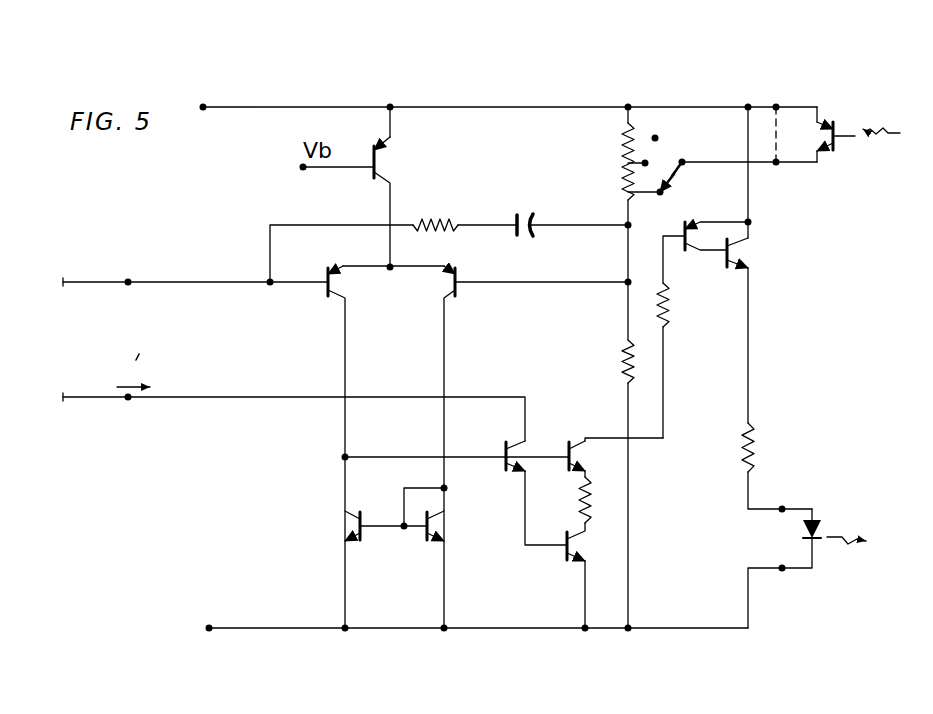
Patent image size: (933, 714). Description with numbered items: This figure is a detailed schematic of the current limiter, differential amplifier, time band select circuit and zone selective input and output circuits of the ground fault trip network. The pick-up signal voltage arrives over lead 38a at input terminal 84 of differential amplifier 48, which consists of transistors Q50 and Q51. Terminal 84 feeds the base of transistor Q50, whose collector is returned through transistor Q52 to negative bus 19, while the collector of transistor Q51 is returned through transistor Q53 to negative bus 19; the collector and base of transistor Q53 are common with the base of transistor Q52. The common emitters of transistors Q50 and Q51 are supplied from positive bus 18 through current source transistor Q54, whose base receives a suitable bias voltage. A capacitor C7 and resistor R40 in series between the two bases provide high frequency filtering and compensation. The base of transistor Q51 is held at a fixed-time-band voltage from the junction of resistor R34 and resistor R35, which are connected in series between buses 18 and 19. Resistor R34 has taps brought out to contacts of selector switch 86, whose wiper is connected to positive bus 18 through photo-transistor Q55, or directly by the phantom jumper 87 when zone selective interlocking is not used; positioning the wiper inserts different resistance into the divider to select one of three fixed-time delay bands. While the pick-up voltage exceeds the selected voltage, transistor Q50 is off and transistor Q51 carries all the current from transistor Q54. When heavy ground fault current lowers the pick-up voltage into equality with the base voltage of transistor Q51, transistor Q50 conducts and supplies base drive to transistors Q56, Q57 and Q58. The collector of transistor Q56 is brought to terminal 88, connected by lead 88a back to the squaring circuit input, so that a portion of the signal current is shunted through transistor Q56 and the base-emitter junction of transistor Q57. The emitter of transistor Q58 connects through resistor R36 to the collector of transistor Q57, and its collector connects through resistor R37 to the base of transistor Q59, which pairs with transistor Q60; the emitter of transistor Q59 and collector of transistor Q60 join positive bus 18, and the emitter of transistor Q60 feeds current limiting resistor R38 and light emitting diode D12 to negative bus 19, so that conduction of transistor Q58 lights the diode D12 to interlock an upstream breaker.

The positive bus 18 is at (495, 106).
The negative bus 19 is at (495, 633).
The differential amplifier 48 is at (435, 235).
The input terminal 84 is at (123, 286).
The lead 38a is at (96, 281).
The terminal 88 is at (125, 401).
The lead 88a is at (103, 396).
The selector switch 86 is at (680, 174).
The jumper 87 is at (778, 132).
The transistor Q50 is at (338, 298).
The transistor Q51 is at (443, 298).
The transistor Q52 is at (355, 527).
The transistor Q53 is at (432, 527).
The transistor Q54 is at (380, 172).
The photo-transistor Q55 is at (843, 121).
The transistor Q56 is at (520, 438).
The transistor Q57 is at (578, 563).
The transistor Q58 is at (580, 433).
The transistor Q59 is at (700, 220).
The transistor Q60 is at (738, 257).
The resistor R34 is at (620, 147).
The resistor R35 is at (624, 356).
The resistor R36 is at (582, 497).
The resistor R37 is at (668, 320).
The current limiting resistor R38 is at (756, 440).
The resistor R40 is at (432, 231).
The capacitor C7 is at (523, 233).
The light emitting diode D12 is at (817, 538).